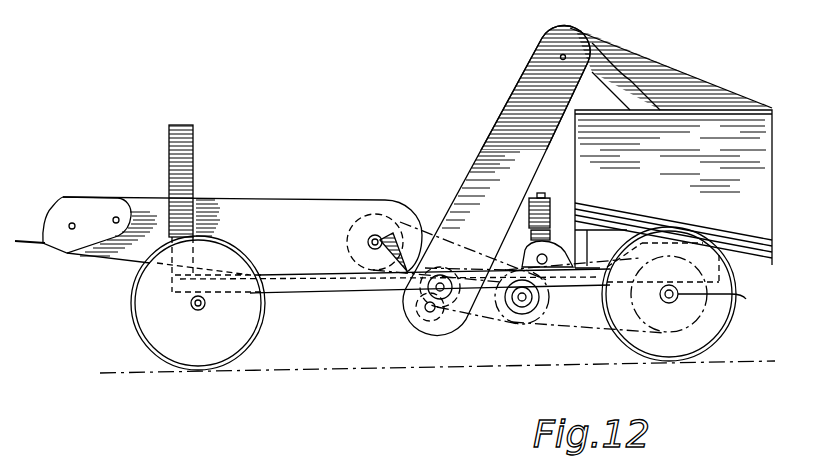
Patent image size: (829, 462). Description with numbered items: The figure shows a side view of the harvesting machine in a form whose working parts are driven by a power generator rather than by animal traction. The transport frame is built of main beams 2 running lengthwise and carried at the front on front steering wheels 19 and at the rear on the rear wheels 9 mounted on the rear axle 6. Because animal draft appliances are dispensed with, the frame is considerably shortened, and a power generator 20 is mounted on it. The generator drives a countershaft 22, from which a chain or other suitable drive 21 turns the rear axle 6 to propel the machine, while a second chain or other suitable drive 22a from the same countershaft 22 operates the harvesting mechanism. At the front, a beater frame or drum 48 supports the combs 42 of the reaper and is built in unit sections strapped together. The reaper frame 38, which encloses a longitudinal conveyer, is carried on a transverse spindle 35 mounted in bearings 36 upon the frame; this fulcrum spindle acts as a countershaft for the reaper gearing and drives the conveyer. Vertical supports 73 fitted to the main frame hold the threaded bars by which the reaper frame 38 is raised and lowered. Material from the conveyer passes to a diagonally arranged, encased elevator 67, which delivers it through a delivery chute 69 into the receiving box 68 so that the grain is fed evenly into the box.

The main beams 2 is at (306, 293).
The rear axle 6 is at (712, 301).
The rear wheels 9 is at (716, 333).
The front steering wheels 19 is at (137, 326).
The power generator 20 is at (540, 210).
The chain drive 21 is at (585, 316).
The countershaft 22 is at (517, 303).
The chain drive 22a is at (460, 273).
The transverse spindle 35 is at (377, 236).
The bearings 36 is at (364, 268).
The reaper frame 38 is at (308, 218).
The combs 42 is at (27, 248).
The beater frame 48 is at (73, 212).
The elevator 67 is at (496, 181).
The receiving box 68 is at (673, 189).
The delivery chute 69 is at (625, 92).
The supports 73 is at (193, 177).